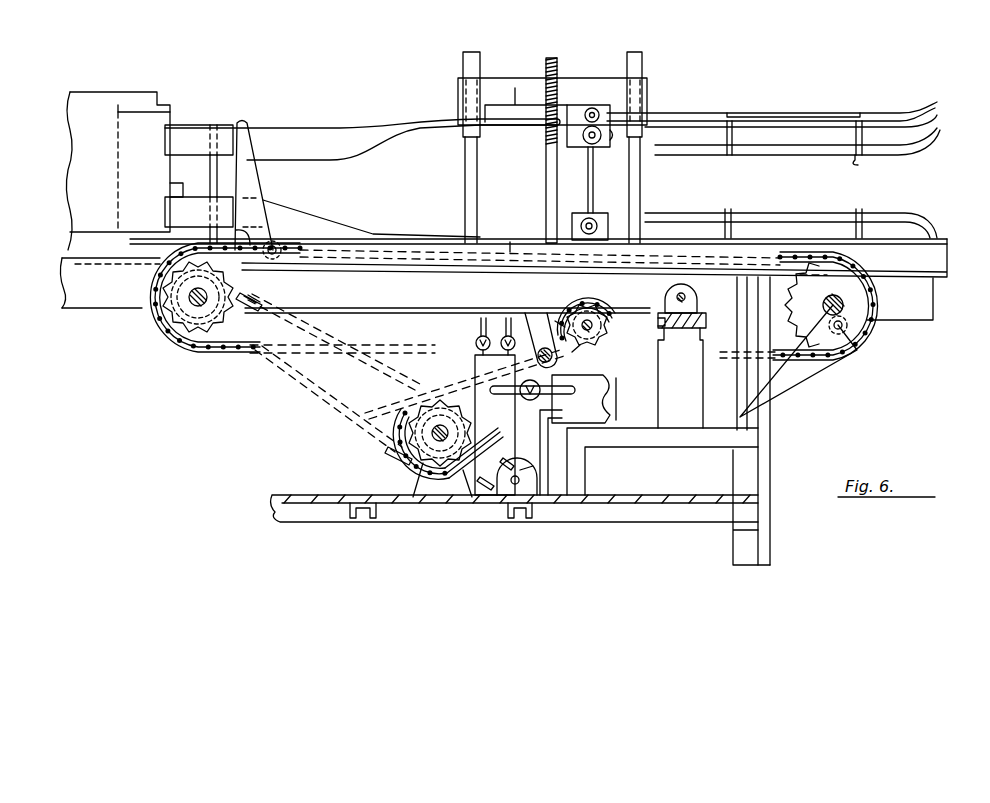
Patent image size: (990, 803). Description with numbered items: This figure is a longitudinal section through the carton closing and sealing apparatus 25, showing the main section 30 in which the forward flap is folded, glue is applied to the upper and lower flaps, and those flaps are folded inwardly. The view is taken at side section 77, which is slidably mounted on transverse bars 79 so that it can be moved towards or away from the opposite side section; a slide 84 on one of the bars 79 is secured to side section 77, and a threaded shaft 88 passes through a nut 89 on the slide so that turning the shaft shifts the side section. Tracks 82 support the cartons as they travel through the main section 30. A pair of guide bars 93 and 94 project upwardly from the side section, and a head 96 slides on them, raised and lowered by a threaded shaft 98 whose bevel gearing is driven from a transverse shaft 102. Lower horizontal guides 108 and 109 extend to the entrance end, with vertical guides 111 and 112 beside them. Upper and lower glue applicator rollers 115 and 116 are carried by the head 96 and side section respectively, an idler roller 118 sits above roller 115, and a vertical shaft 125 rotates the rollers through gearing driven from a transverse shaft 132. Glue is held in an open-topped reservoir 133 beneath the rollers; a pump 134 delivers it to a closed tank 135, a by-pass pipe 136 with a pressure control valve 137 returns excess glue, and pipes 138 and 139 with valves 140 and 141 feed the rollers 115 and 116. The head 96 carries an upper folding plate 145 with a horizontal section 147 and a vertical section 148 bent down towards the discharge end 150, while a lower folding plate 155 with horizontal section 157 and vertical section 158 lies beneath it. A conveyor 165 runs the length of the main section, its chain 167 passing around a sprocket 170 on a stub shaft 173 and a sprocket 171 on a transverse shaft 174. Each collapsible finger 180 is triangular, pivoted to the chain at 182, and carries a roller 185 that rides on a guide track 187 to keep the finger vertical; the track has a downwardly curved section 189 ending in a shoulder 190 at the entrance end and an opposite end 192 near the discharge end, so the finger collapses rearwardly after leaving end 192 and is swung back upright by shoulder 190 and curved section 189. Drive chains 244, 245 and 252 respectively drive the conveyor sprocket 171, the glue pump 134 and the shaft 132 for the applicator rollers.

The apparatus 25 is at (831, 73).
The main section 30 is at (459, 67).
The side section 77 is at (660, 79).
The transverse bars 79 is at (657, 326).
The tracks 82 is at (946, 253).
The slide 84 is at (702, 336).
The threaded shaft 88 is at (676, 298).
The nut 89 is at (668, 297).
The guide bar 93 is at (470, 185).
The guide bar 94 is at (637, 180).
The head 96 is at (602, 80).
The threaded shaft 98 is at (546, 165).
The transverse shaft 102 is at (545, 312).
The lower horizontal guide 108 is at (765, 114).
The lower horizontal guide 109 is at (775, 230).
The vertical guide 111 is at (872, 159).
The vertical guide 112 is at (858, 212).
The upper glue applicator roller 115 is at (612, 140).
The lower glue applicator roller 116 is at (610, 222).
The idler roller 118 is at (590, 107).
The vertical shaft 125 is at (588, 185).
The transverse shaft 132 is at (603, 305).
The reservoir 133 is at (610, 386).
The pump 134 is at (560, 492).
The closed tank 135 is at (475, 373).
The by-pass pipe 136 is at (573, 394).
The pressure control valve 137 is at (517, 409).
The pipe 138 is at (480, 328).
The pipe 139 is at (508, 316).
The valve 140 is at (476, 344).
The valve 141 is at (530, 381).
The upper folding plate 145 is at (368, 127).
The horizontal section 147 is at (535, 124).
The vertical section 148 is at (295, 128).
The discharge end 150 is at (197, 127).
The lower folding plate 155 is at (285, 210).
The horizontal section 157 is at (522, 238).
The vertical section 158 is at (180, 190).
The conveyor 165 is at (155, 345).
The chain 167 is at (196, 352).
The sprocket 170 is at (745, 300).
The sprocket 171 is at (265, 304).
The stub shaft 173 is at (878, 300).
The transverse shaft 174 is at (190, 297).
The collapsible finger 180 is at (253, 182).
The pivot 182 is at (236, 228).
The roller 185 is at (285, 245).
The guide track 187 is at (700, 264).
The downwardly curved section 189 is at (870, 270).
The shoulder 190 is at (872, 314).
The opposite end 192 is at (150, 246).
The chain 244 is at (398, 455).
The chain 245 is at (492, 498).
The chain 252 is at (420, 420).